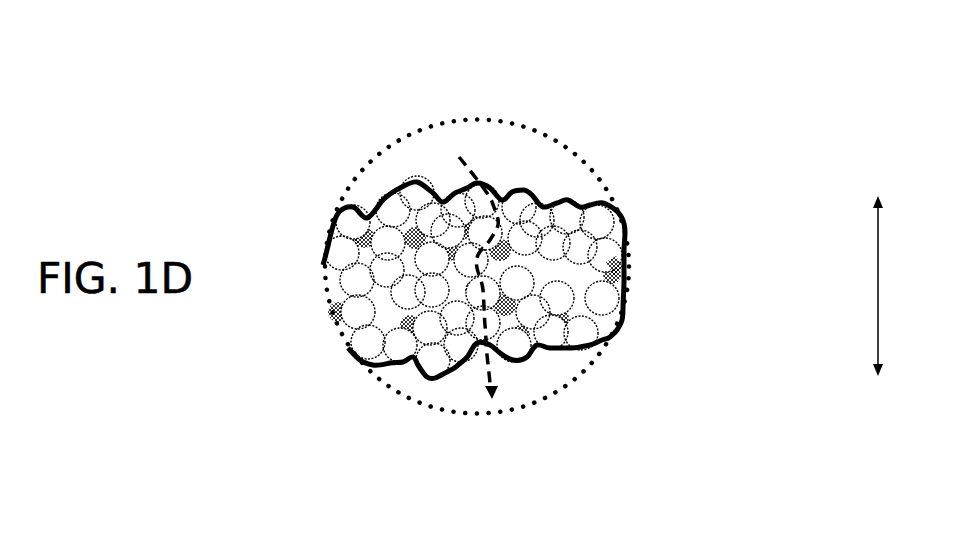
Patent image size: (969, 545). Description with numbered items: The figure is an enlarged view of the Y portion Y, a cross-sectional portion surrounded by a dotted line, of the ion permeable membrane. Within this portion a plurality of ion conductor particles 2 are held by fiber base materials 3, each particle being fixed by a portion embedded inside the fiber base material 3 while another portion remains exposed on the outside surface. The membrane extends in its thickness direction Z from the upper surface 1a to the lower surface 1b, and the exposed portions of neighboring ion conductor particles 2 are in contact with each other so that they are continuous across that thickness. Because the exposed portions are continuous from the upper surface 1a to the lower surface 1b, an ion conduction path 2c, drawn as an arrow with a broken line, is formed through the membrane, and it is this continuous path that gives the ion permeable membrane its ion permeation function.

The upper surface 1a is at (530, 190).
The lower surface 1b is at (523, 358).
The ion conductor particle 2 is at (605, 300).
The ion conduction path 2c is at (469, 262).
The fiber base material 3 is at (615, 267).
The Y portion Y is at (601, 178).
The thickness direction Z is at (890, 286).